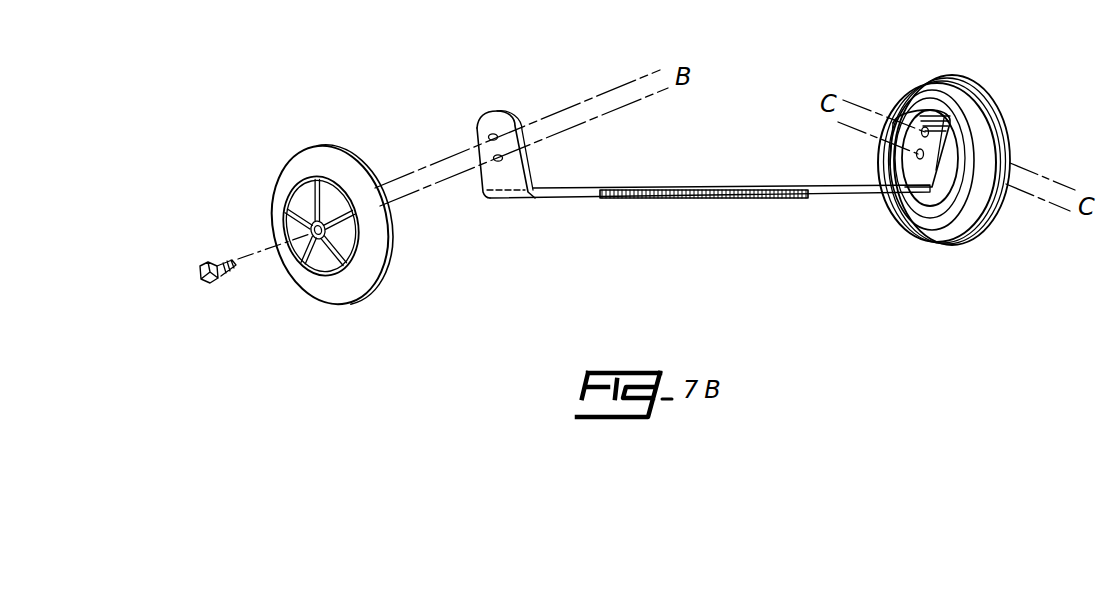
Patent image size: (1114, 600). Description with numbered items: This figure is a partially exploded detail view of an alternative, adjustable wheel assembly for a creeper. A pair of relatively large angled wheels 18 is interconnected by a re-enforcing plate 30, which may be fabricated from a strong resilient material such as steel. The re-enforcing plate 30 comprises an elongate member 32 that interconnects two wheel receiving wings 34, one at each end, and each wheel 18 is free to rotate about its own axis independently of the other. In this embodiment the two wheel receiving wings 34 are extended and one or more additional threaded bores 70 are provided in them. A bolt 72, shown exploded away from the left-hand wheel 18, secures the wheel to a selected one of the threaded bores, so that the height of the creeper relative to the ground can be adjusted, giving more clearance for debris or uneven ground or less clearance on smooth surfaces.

The angled wheel 18 is at (296, 168).
The re-enforcing plate 30 is at (840, 196).
The elongate member 32 is at (708, 190).
The wheel receiving wing 34 is at (537, 176).
The additional threaded bore 70 is at (494, 158).
The bolt 72 is at (202, 268).